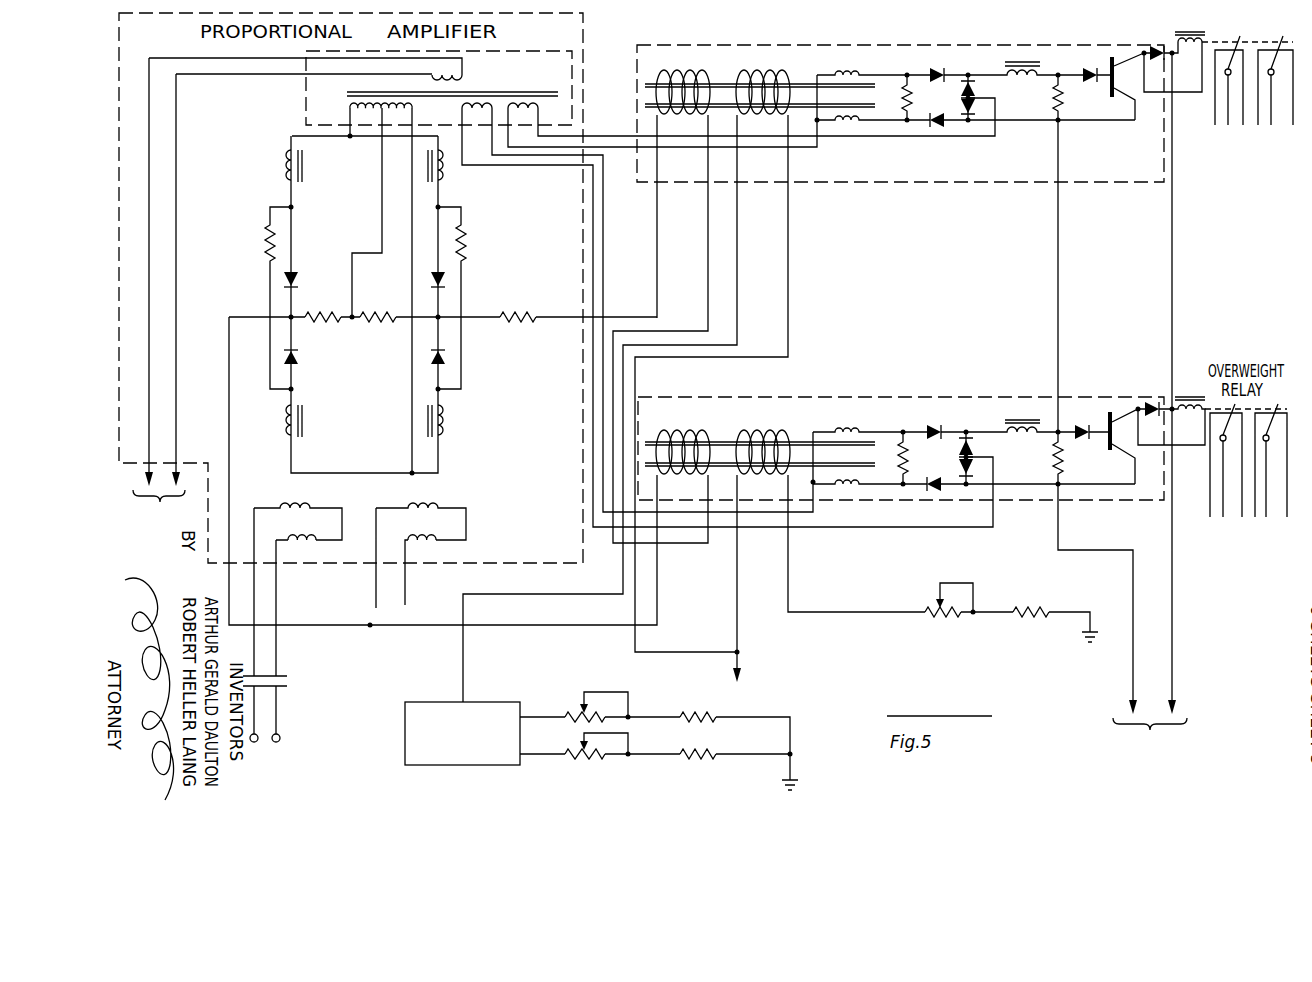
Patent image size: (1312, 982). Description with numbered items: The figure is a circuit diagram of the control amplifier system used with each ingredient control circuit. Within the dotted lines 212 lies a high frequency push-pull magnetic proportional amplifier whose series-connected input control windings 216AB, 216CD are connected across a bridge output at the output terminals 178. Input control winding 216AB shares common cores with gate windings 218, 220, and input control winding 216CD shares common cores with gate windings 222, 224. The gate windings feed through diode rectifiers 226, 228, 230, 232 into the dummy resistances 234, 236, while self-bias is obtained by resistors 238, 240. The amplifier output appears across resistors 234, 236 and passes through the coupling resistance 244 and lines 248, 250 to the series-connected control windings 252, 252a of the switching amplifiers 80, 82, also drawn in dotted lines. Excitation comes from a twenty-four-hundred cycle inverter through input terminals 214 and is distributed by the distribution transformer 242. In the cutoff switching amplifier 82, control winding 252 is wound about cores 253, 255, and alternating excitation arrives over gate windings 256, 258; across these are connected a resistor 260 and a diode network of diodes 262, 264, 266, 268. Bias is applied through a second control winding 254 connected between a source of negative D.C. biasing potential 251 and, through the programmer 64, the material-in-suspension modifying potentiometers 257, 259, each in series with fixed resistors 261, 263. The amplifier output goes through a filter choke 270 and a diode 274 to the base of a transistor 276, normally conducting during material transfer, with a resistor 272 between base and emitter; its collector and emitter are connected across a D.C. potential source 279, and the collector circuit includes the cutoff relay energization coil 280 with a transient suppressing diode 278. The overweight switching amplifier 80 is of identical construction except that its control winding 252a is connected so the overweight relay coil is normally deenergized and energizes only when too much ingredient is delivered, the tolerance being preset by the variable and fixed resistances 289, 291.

The programmer 64 is at (476, 708).
The switching amplifier 80 is at (838, 392).
The cutoff control switching amplifier 82 is at (886, 46).
The output terminals 178 is at (266, 742).
The proportional amplifier 212 is at (386, 184).
The input terminals 214 is at (158, 500).
The input control winding 216AB is at (295, 508).
The input control winding 216CD is at (300, 546).
The gate winding 218 is at (287, 168).
The gate winding 220 is at (443, 178).
The gate winding 222 is at (300, 425).
The gate winding 224 is at (445, 428).
The diode rectifier 226 is at (296, 275).
The diode rectifier 228 is at (297, 359).
The diode rectifier 230 is at (444, 280).
The diode rectifier 232 is at (447, 363).
The dummy resistance 234 is at (329, 305).
The dummy resistance 236 is at (390, 305).
The self-bias resistor 238 is at (265, 240).
The self-bias resistor 240 is at (467, 244).
The distribution transformer 242 is at (306, 95).
The coupling resistance 244 is at (506, 312).
The line 248 is at (656, 248).
The line 250 is at (372, 628).
The source of negative D.C. biasing potential 251 is at (742, 652).
The control winding 252 is at (684, 74).
The control winding 252a is at (680, 432).
The core 253 is at (725, 84).
The second control winding 254 is at (766, 70).
The core 255 is at (717, 107).
The gate winding 256 is at (845, 70).
The potentiometer 257 is at (580, 703).
The gate winding 258 is at (845, 126).
The potentiometer 259 is at (580, 762).
The resistor 260 is at (912, 92).
The fixed resistor 261 is at (700, 712).
The diode 262 is at (937, 66).
The fixed resistor 263 is at (692, 758).
The diode 264 is at (966, 80).
The diode 266 is at (975, 105).
The diode 268 is at (937, 128).
The filter choke 270 is at (1022, 62).
The resistor 272 is at (1052, 96).
The diode 274 is at (1086, 70).
The transistor 276 is at (1122, 102).
The transient suppressing diode 278 is at (1152, 48).
The D.C. potential source 279 is at (1152, 712).
The cutoff relay energization coil 280 is at (1185, 33).
The variable resistance 289 is at (940, 620).
The fixed resistance 291 is at (1026, 620).